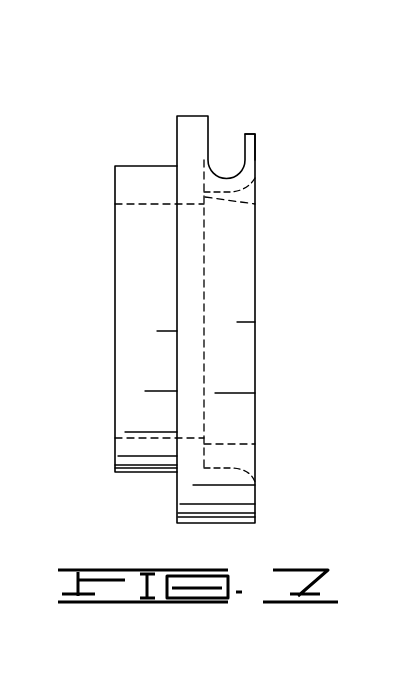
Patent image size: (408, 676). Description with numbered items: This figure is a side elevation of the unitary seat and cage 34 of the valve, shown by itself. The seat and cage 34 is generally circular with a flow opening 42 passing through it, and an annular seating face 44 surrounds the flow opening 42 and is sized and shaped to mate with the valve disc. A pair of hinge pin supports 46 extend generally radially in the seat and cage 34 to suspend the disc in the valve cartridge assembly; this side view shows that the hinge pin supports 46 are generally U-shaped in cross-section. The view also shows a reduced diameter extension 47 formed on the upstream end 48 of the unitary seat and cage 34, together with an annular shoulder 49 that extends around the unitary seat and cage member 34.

The unitary seat and cage 34 is at (148, 152).
The flow opening 42 is at (204, 308).
The annular seating face 44 is at (255, 204).
The hinge pin supports 46 is at (245, 150).
The reduced diameter extension 47 is at (115, 471).
The upstream end 48 is at (115, 332).
The annular shoulder 49 is at (177, 145).